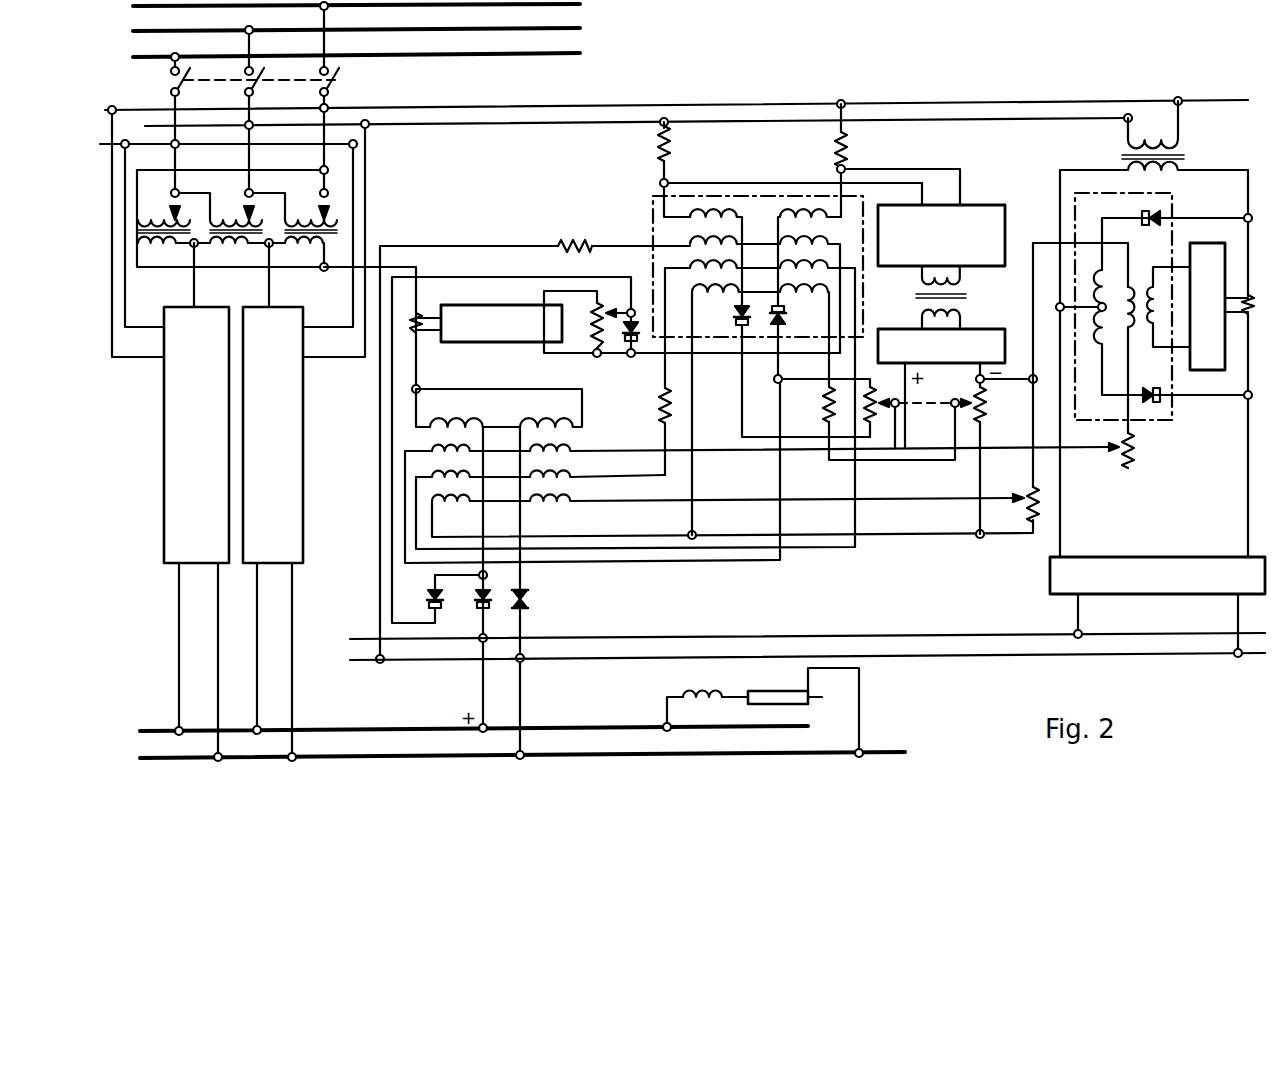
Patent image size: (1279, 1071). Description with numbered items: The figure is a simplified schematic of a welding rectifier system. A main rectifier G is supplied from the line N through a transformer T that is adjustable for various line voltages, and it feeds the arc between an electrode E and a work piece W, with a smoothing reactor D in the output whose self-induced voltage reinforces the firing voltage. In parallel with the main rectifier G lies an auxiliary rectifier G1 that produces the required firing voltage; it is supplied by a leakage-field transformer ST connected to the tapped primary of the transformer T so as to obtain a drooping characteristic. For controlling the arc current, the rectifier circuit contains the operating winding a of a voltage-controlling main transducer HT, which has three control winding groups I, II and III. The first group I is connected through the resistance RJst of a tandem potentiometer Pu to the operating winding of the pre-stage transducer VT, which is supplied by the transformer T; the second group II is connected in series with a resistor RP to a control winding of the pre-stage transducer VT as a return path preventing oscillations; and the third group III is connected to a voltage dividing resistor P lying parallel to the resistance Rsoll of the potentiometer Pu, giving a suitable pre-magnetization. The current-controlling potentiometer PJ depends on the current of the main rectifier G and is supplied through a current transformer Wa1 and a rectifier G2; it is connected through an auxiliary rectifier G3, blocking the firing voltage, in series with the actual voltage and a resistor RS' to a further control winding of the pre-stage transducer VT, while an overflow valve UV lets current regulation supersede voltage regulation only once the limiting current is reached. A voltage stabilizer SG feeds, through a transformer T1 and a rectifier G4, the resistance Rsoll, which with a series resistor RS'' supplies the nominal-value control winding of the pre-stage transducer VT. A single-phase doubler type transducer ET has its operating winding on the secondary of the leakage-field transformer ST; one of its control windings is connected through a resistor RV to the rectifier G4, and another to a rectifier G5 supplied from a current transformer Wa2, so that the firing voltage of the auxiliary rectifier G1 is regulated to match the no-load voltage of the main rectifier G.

The line N is at (368, 30).
The transformer T is at (234, 202).
The resistor RS' is at (535, 228).
The rectifier G2 is at (464, 306).
The current transformer Wa1 is at (422, 338).
The current-controlling potentiometer PJ is at (590, 324).
The overflow valve UV is at (643, 350).
The main transducer HT is at (507, 413).
The operating winding a is at (460, 421).
The first control winding group I is at (574, 444).
The second control winding group II is at (570, 471).
The third control winding group III is at (565, 496).
The auxiliary rectifier G3 is at (440, 598).
The main rectifier G is at (510, 630).
The pre-stage transducer VT is at (653, 203).
The resistor RP is at (655, 400).
The voltage stabilizer SG is at (941, 235).
The transformer T1 is at (963, 298).
The rectifier G4 is at (892, 329).
The resistor RS'' is at (872, 422).
The resistance RJst is at (836, 403).
The tandem potentiometer Pu is at (932, 405).
The resistance Rsoll is at (977, 400).
The leakage-field transformer ST is at (1183, 157).
The transducer ET is at (1173, 205).
The rectifier G5 is at (1204, 245).
The current transformer Wa2 is at (1244, 320).
The resistor RV is at (1139, 458).
The voltage dividing resistor P is at (1026, 492).
The auxiliary rectifier G1 is at (1152, 556).
The smoothing reactor D is at (690, 688).
The work piece W is at (796, 696).
The electrode E is at (796, 682).